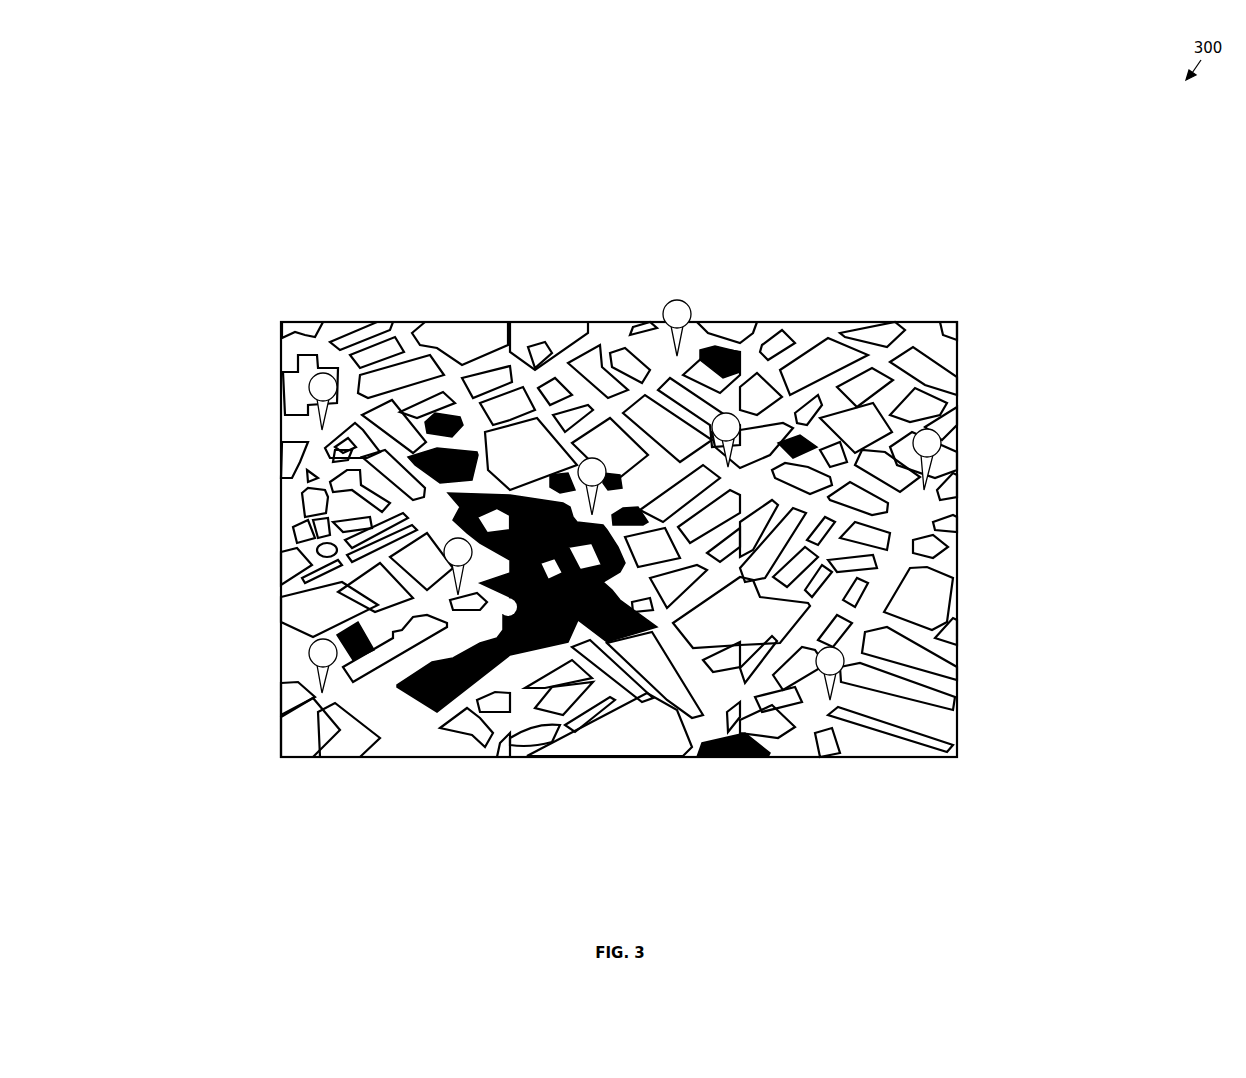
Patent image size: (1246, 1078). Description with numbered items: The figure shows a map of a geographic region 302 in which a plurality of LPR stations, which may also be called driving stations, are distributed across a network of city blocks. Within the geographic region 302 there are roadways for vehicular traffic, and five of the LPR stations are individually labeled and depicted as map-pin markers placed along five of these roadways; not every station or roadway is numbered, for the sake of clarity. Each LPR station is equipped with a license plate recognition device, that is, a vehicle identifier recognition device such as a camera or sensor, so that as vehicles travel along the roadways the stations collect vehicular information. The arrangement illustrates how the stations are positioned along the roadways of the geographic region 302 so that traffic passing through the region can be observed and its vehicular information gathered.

The geographic region 302 is at (872, 322).